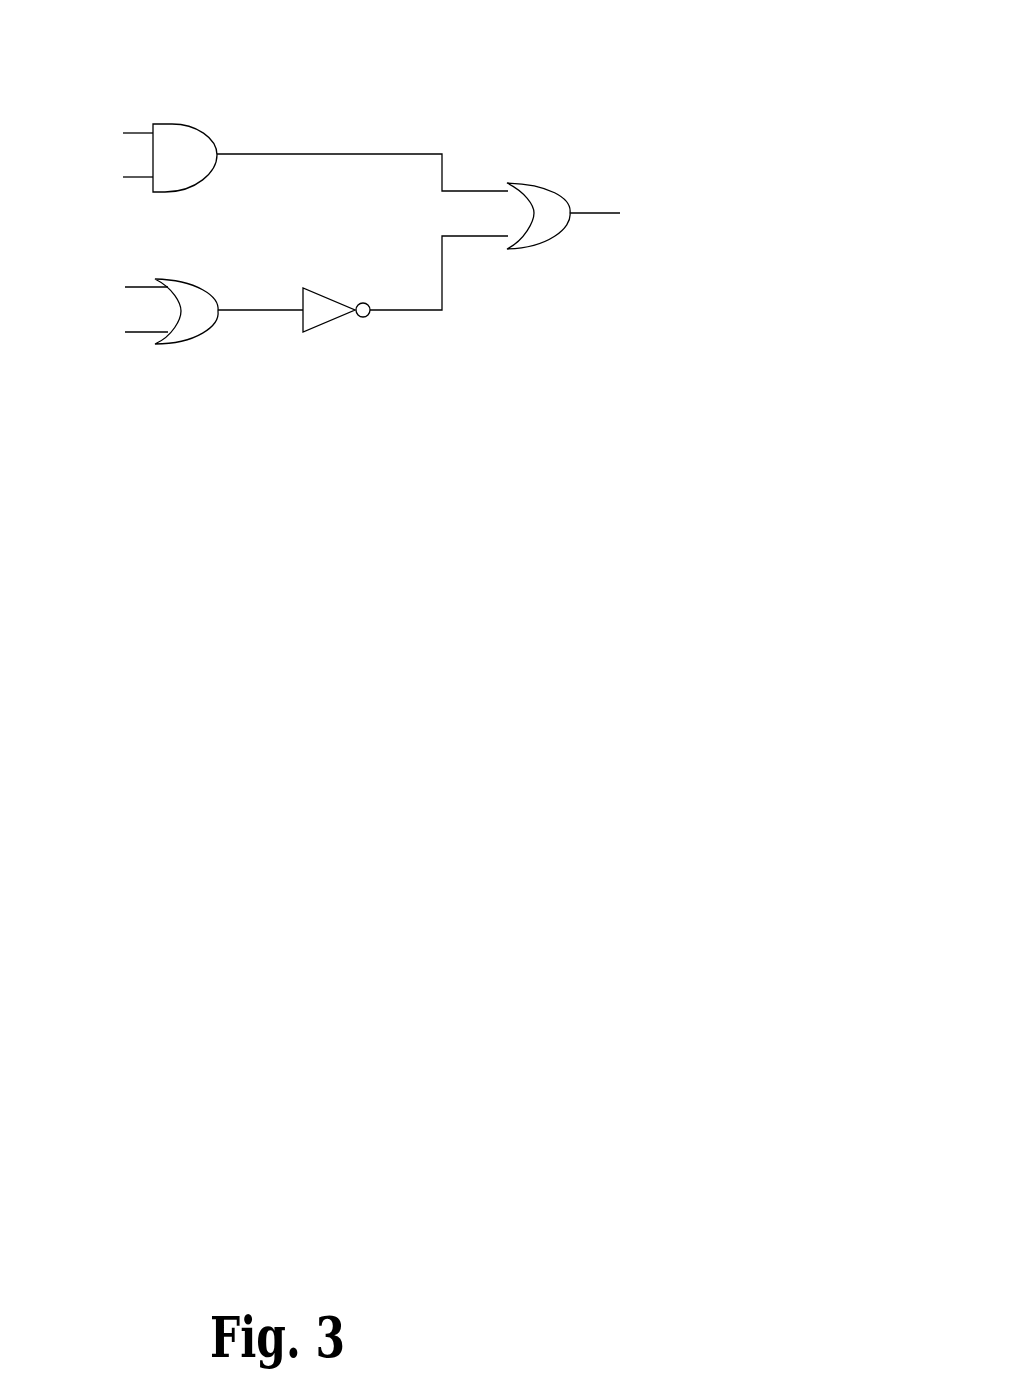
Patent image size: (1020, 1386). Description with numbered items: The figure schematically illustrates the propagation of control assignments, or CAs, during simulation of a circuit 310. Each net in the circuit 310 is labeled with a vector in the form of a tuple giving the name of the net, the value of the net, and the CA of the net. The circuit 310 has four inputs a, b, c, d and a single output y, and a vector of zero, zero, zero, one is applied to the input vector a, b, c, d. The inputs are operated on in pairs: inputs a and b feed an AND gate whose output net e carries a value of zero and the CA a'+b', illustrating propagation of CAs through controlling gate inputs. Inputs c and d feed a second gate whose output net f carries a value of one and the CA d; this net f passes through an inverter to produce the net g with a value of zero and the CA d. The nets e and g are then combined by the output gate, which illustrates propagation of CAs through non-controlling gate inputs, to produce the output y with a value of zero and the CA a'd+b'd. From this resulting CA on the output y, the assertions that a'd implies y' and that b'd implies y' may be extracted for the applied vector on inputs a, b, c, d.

The circuit 310 is at (602, 108).
The input a is at (119, 120).
The input b is at (119, 164).
The input c is at (129, 272).
The input d is at (129, 317).
The net e is at (362, 161).
The net f is at (260, 296).
The net g is at (432, 276).
The output y is at (636, 196).